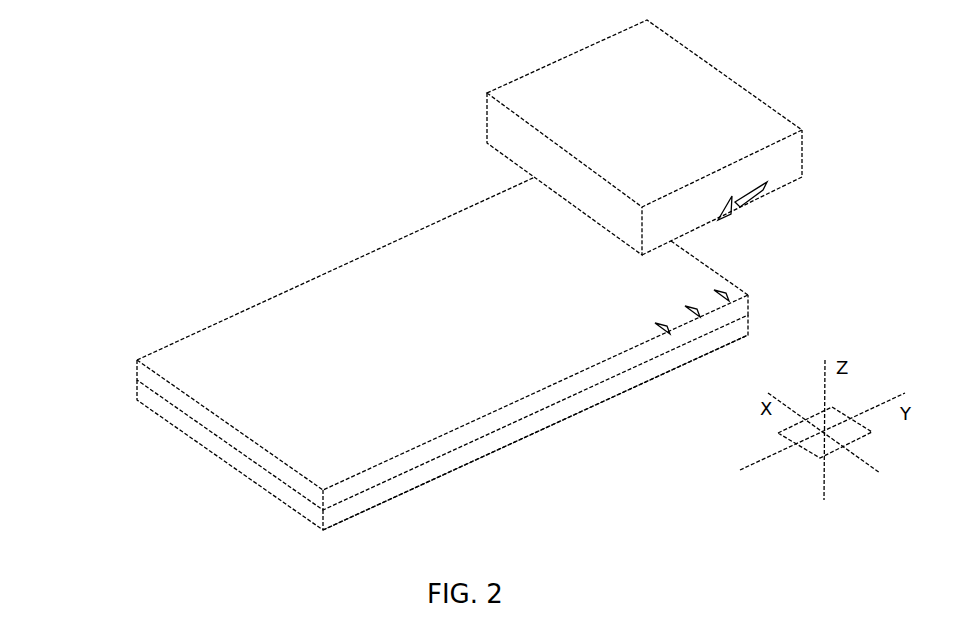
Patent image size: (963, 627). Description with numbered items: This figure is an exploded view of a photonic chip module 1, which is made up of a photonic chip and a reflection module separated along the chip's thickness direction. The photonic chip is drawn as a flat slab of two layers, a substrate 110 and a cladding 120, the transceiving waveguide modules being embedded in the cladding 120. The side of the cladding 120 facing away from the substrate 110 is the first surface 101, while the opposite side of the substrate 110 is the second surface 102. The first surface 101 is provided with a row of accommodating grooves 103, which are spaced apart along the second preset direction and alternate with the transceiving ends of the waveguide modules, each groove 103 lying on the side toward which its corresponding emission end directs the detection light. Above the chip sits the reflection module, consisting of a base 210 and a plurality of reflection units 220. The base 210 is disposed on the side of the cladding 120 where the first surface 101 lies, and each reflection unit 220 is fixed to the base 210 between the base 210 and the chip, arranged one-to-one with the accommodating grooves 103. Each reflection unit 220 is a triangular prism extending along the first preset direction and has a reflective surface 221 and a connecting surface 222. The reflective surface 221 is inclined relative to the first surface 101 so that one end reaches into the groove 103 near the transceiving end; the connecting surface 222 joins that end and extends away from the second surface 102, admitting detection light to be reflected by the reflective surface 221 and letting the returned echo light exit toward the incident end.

The photonic chip module 1 is at (74, 54).
The first surface 101 is at (387, 452).
The second surface 102 is at (380, 502).
The accommodating grooves 103 is at (723, 300).
The substrate 110 is at (578, 403).
The cladding 120 is at (578, 377).
The base 210 is at (794, 164).
The reflection units 220 is at (783, 219).
The reflective surface 221 is at (741, 200).
The connecting surface 222 is at (727, 205).